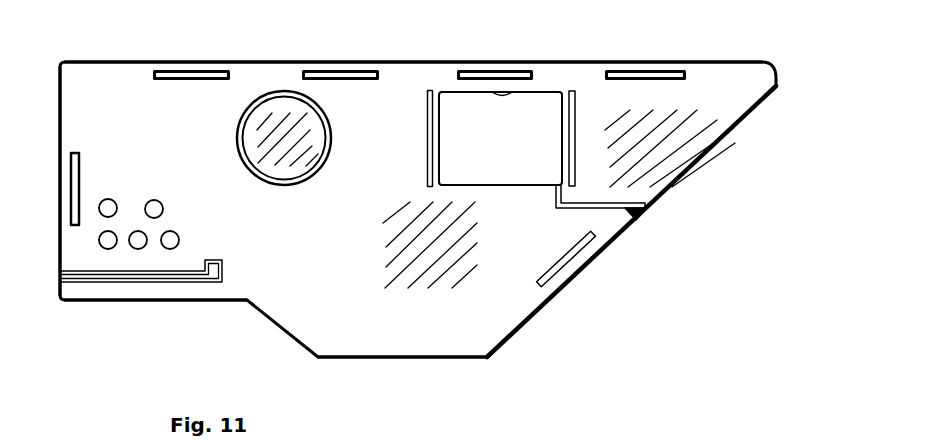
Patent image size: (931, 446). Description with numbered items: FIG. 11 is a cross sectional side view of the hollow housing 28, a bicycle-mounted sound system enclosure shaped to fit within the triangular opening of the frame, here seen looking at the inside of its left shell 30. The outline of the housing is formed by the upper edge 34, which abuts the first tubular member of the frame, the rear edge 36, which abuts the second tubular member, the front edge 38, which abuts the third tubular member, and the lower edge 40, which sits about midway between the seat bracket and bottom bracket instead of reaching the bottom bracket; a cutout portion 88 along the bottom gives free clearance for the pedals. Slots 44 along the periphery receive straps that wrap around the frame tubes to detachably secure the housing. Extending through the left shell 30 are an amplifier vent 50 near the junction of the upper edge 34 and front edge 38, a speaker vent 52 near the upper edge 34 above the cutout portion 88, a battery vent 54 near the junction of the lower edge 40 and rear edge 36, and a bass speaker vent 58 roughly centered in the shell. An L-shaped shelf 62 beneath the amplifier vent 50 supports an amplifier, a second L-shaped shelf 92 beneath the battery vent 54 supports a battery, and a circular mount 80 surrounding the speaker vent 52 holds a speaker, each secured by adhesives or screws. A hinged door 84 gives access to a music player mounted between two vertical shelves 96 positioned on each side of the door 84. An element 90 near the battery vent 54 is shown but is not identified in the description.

The hollow housing 28 is at (540, 315).
The left shell 30 is at (398, 90).
The upper edge 34 is at (485, 68).
The rear edge 36 is at (57, 130).
The front edge 38 is at (600, 255).
The lower edge 40 is at (327, 360).
The slots 44 is at (347, 78).
The amplifier vent 50 is at (650, 150).
The speaker vent 52 is at (283, 133).
The battery vent 54 is at (125, 222).
The bass speaker vent 58 is at (428, 250).
The L-shaped shelf 62 is at (627, 210).
The circular mount 80 is at (262, 92).
The door 84 is at (540, 110).
The cutout portion 88 is at (150, 303).
The post 90 is at (105, 205).
The second L-shaped shelf 92 is at (113, 273).
The vertical shelves 96 is at (430, 90).